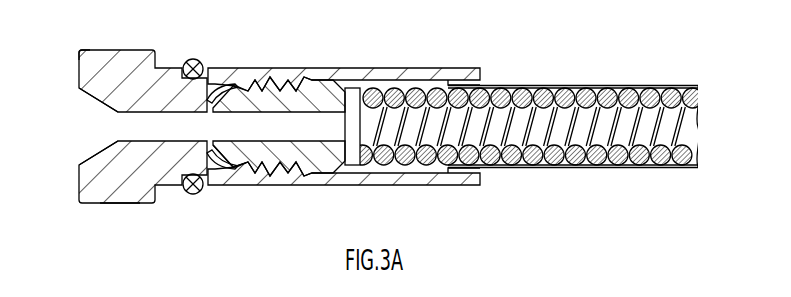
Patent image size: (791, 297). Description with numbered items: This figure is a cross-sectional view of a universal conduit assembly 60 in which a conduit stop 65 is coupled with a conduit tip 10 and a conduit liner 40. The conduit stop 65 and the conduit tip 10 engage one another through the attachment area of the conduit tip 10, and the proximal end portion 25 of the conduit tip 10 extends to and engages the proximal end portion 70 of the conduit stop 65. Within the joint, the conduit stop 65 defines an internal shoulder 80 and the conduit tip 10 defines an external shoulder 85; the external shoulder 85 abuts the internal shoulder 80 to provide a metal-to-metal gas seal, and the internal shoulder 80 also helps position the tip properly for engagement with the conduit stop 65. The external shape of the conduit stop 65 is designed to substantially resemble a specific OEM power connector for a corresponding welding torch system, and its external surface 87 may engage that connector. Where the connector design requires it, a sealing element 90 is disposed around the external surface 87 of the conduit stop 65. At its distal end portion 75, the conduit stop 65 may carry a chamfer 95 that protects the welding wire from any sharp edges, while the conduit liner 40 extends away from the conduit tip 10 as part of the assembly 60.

The conduit tip 10 is at (315, 93).
The proximal end portion of the conduit tip 25 is at (243, 97).
The conduit liner 40 is at (620, 120).
The universal conduit assembly 60 is at (473, 57).
The conduit stop 65 is at (125, 65).
The proximal end portion of the conduit stop 70 is at (208, 100).
The distal end portion of the conduit stop 75 is at (80, 55).
The internal shoulder 80 is at (218, 163).
The external shoulder 85 is at (233, 153).
The external surface 87 is at (117, 205).
The sealing element 90 is at (195, 194).
The chamfer 95 is at (85, 117).